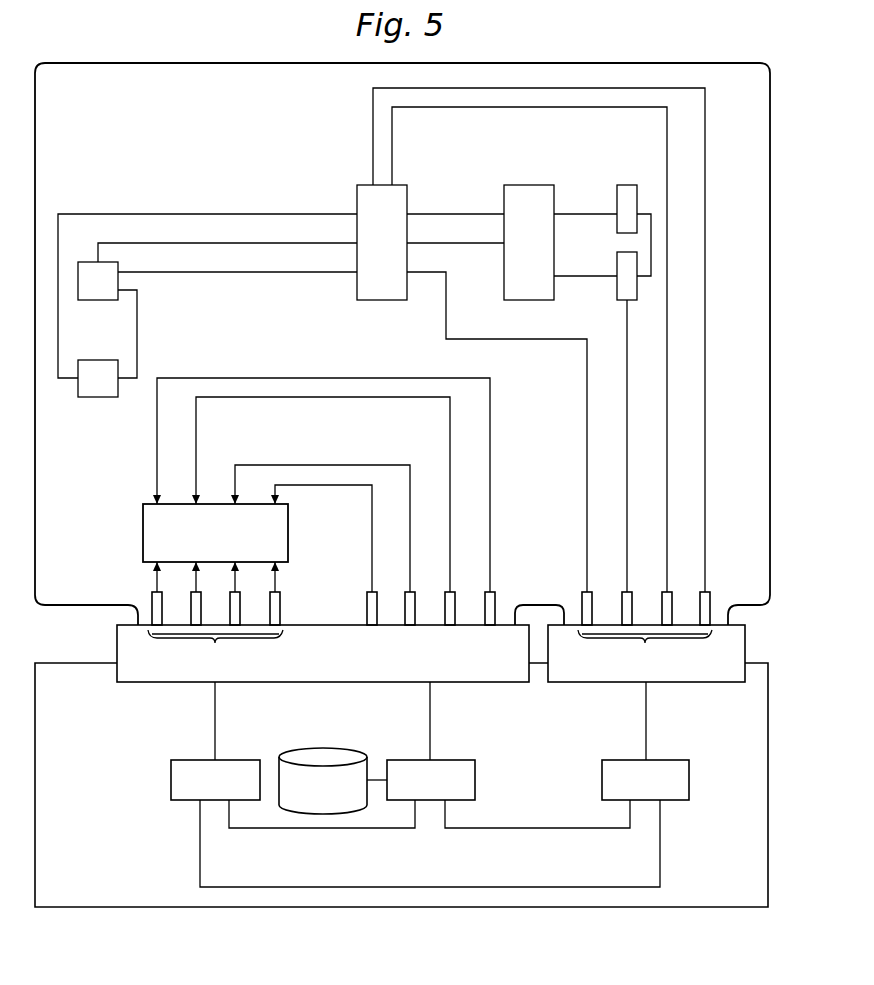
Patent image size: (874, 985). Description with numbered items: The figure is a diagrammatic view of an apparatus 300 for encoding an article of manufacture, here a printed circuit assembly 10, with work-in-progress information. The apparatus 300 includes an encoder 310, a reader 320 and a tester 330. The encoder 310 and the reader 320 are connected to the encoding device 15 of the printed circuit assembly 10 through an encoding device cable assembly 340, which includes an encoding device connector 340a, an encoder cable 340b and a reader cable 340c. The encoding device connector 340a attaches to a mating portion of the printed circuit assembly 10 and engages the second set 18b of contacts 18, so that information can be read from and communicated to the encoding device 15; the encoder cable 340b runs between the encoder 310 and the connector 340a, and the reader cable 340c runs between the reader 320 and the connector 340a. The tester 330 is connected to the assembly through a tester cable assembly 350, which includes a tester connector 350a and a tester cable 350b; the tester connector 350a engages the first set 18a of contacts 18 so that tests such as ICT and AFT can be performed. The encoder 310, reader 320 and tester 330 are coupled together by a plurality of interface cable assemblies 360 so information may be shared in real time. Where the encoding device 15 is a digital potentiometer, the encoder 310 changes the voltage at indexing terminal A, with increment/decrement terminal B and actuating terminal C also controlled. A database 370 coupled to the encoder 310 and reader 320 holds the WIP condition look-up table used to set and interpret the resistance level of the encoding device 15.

The printed circuit assembly 10 is at (219, 151).
The encoding device 15 is at (143, 532).
The contacts 18 is at (152, 600).
The first set of contacts 18a is at (645, 651).
The second set of contacts 18b is at (215, 651).
The apparatus 300 is at (134, 854).
The encoder 310 is at (168, 780).
The reader 320 is at (403, 760).
The tester 330 is at (690, 781).
The encoding device cable assembly 340 is at (100, 645).
The encoding device connector 340a is at (512, 683).
The encoder cable 340b is at (212, 712).
The reader cable 340c is at (432, 730).
The tester cable assembly 350 is at (762, 645).
The tester connector 350a is at (721, 683).
The tester cable 350b is at (647, 730).
The interface cable assemblies 360 is at (323, 829).
The database 370 is at (321, 752).